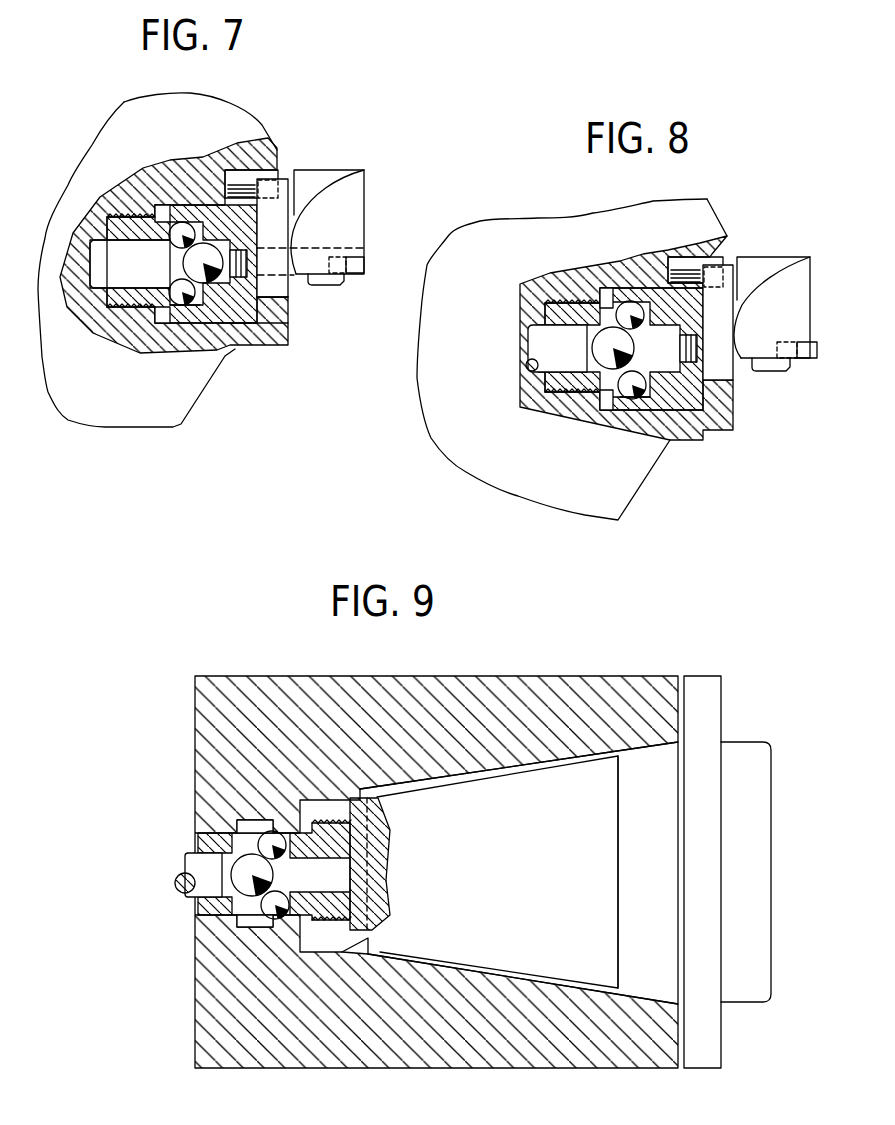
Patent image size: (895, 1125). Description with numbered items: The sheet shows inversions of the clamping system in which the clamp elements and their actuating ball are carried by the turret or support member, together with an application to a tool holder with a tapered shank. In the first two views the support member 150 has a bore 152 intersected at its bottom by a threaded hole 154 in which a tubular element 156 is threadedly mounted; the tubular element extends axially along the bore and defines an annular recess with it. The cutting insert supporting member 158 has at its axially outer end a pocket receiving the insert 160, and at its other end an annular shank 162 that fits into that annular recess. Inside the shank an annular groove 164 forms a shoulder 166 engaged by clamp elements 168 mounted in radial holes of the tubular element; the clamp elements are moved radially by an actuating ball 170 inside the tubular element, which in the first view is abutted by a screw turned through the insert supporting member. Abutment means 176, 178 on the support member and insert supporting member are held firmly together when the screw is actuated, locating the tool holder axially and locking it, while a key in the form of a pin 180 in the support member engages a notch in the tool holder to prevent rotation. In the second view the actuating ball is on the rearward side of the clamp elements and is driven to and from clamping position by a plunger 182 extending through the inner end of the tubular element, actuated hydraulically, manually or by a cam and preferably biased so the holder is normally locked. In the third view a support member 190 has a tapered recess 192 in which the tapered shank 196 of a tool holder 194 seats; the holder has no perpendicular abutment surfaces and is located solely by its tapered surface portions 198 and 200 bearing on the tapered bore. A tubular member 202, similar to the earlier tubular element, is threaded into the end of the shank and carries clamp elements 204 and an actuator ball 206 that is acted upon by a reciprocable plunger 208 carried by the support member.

In FIG. 7, the support member 150 is at (255, 120).
In FIG. 8, the support member 150 is at (703, 215).
In FIG. 7, the bore 152 is at (172, 318).
In FIG. 7, the threaded hole 154 is at (105, 303).
In FIG. 7, the tubular element 156 is at (110, 218).
In FIG. 7, the cutting insert supporting member 158 is at (282, 288).
In FIG. 8, the cutting insert supporting member 158 is at (727, 377).
In FIG. 7, the insert 160 is at (364, 262).
In FIG. 7, the annular shank 162 is at (242, 322).
In FIG. 7, the annular groove 164 is at (190, 310).
In FIG. 8, the annular groove 164 is at (643, 397).
In FIG. 7, the shoulder 166 is at (180, 308).
In FIG. 8, the shoulder 166 is at (620, 397).
In FIG. 7, the clamp elements 168 is at (178, 293).
In FIG. 8, the clamp elements 168 is at (633, 380).
In FIG. 7, the actuating ball 170 is at (185, 264).
In FIG. 8, the actuating ball 170 is at (627, 343).
In FIG. 7, the abutment means element 176 is at (255, 330).
In FIG. 8, the abutment means element 176 is at (733, 418).
In FIG. 7, the abutment means element 178 is at (243, 343).
In FIG. 8, the abutment means element 178 is at (697, 433).
In FIG. 7, the pin 180 is at (267, 173).
In FIG. 8, the pin 180 is at (717, 260).
In FIG. 8, the plunger 182 is at (553, 348).
In FIG. 9, the support member 190 is at (575, 676).
In FIG. 9, the tapered recess 192 is at (509, 773).
In FIG. 9, the tool holder 194 is at (740, 748).
In FIG. 9, the tapered shank 196 is at (560, 900).
In FIG. 9, the tapered surface portion 198 is at (348, 953).
In FIG. 9, the tapered surface portion 200 is at (639, 833).
In FIG. 9, the tubular member 202 is at (197, 908).
In FIG. 9, the clamp elements 204 is at (283, 860).
In FIG. 9, the actuator ball 206 is at (232, 855).
In FIG. 9, the reciprocable plunger 208 is at (190, 868).